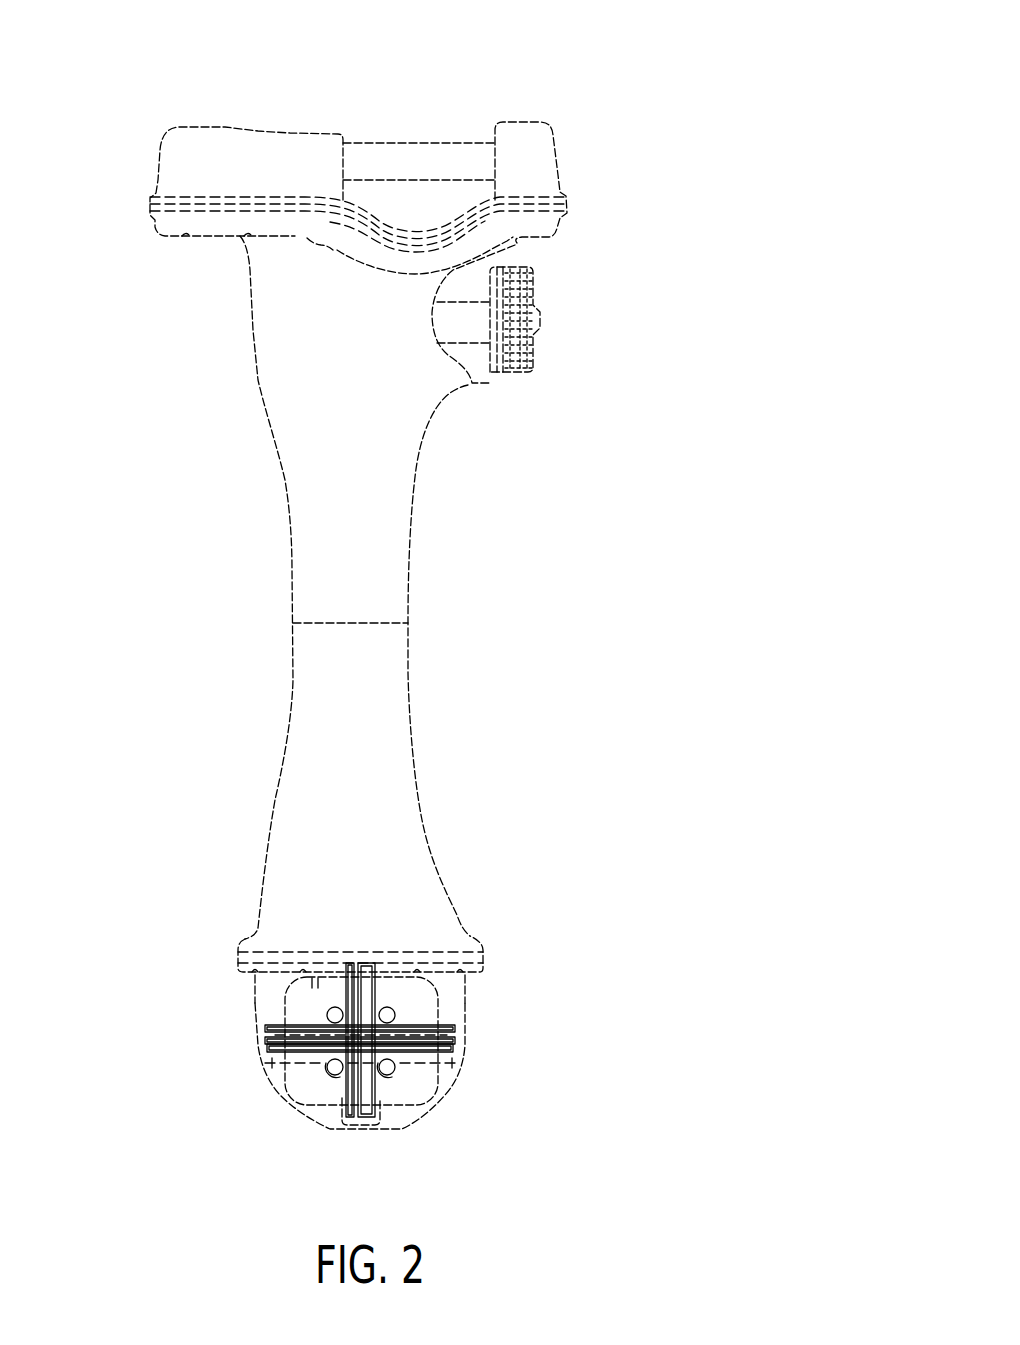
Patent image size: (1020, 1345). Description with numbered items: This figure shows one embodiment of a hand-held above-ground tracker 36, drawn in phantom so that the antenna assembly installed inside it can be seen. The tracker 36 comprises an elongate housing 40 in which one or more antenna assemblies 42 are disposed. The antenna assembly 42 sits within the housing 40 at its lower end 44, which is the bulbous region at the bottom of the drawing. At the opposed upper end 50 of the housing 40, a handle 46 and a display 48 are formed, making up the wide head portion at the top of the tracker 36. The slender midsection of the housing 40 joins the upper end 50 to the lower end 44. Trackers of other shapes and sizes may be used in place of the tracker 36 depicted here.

The above-ground tracker 36 is at (598, 63).
The elongate housing 40 is at (414, 475).
The antenna assembly 42 is at (428, 1002).
The lower end 44 is at (256, 1018).
The handle 46 is at (402, 145).
The display 48 is at (226, 130).
The upper end 50 is at (155, 222).